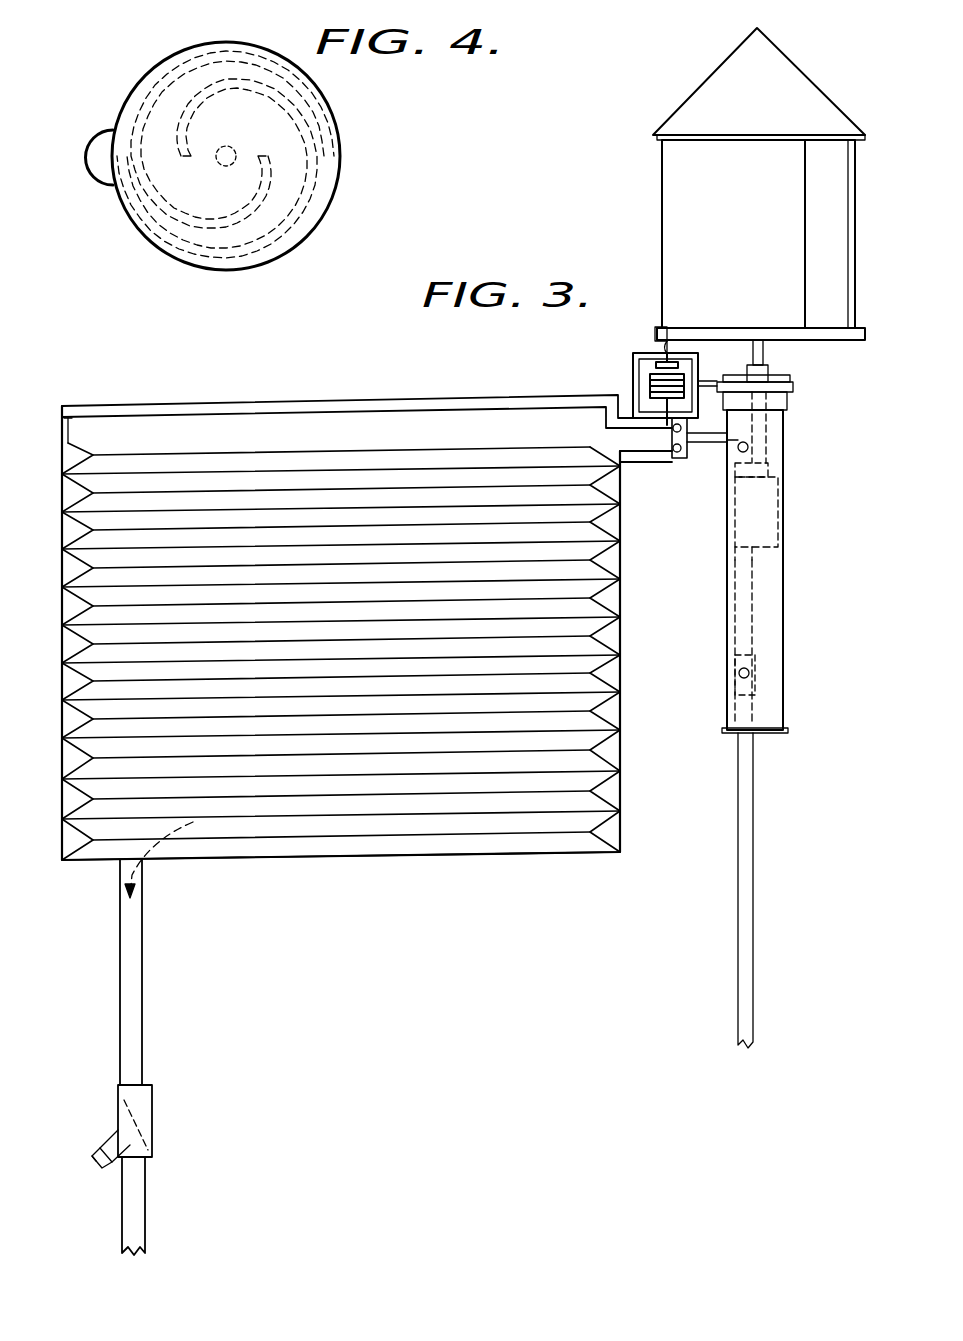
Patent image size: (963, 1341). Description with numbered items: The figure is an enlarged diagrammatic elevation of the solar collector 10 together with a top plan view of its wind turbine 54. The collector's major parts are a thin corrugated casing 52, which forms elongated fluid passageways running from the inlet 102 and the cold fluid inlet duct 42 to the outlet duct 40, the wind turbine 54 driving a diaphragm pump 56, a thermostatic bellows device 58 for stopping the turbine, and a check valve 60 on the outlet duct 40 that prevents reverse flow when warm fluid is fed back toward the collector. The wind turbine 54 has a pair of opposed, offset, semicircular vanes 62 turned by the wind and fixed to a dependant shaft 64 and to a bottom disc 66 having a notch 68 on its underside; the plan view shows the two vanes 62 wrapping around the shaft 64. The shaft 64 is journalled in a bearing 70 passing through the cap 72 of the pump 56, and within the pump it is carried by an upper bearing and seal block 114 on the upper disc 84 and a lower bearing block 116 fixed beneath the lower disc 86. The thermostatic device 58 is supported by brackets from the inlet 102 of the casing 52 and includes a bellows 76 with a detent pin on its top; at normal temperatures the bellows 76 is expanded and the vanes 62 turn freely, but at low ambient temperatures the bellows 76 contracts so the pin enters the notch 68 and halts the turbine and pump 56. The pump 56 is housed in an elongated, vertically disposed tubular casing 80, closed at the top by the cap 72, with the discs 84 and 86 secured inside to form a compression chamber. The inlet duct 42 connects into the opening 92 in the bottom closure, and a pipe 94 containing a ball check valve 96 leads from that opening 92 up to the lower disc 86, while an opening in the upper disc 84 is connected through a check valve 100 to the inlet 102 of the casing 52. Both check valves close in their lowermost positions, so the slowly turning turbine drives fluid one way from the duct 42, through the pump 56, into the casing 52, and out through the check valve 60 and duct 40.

In FIG. 3, the solar collector 10 is at (608, 264).
In FIG. 3, the outlet duct 40 is at (128, 1215).
In FIG. 3, the inlet duct 42 is at (755, 872).
In FIG. 3, the corrugated casing 52 is at (470, 812).
In FIG. 4, the wind turbine 54 is at (352, 156).
In FIG. 3, the wind turbine 54 is at (690, 85).
In FIG. 3, the diaphragm pump 56 is at (795, 573).
In FIG. 3, the thermostatic bellows device 58 is at (660, 337).
In FIG. 3, the check valve 60 is at (103, 1142).
In FIG. 4, the semicircular vanes 62 is at (247, 80).
In FIG. 3, the semicircular vanes 62 is at (805, 230).
In FIG. 4, the shaft 64 is at (235, 152).
In FIG. 3, the shaft 64 is at (765, 350).
In FIG. 3, the bottom disc 66 is at (862, 334).
In FIG. 3, the notch 68 is at (672, 332).
In FIG. 3, the bearing 70 is at (770, 375).
In FIG. 3, the cap 72 is at (795, 391).
In FIG. 3, the bellows 76 is at (634, 380).
In FIG. 3, the tubular casing 80 is at (785, 652).
In FIG. 3, the upper disc 84 is at (778, 478).
In FIG. 3, the lower disc 86 is at (735, 548).
In FIG. 3, the opening 92 is at (765, 702).
In FIG. 3, the pipe 94 is at (735, 602).
In FIG. 3, the ball check valve 96 is at (752, 673).
In FIG. 3, the check valve 100 is at (738, 455).
In FIG. 3, the inlet 102 is at (693, 463).
In FIG. 3, the upper pump bearing and seal block 114 is at (770, 458).
In FIG. 3, the lower bearing block 116 is at (780, 540).